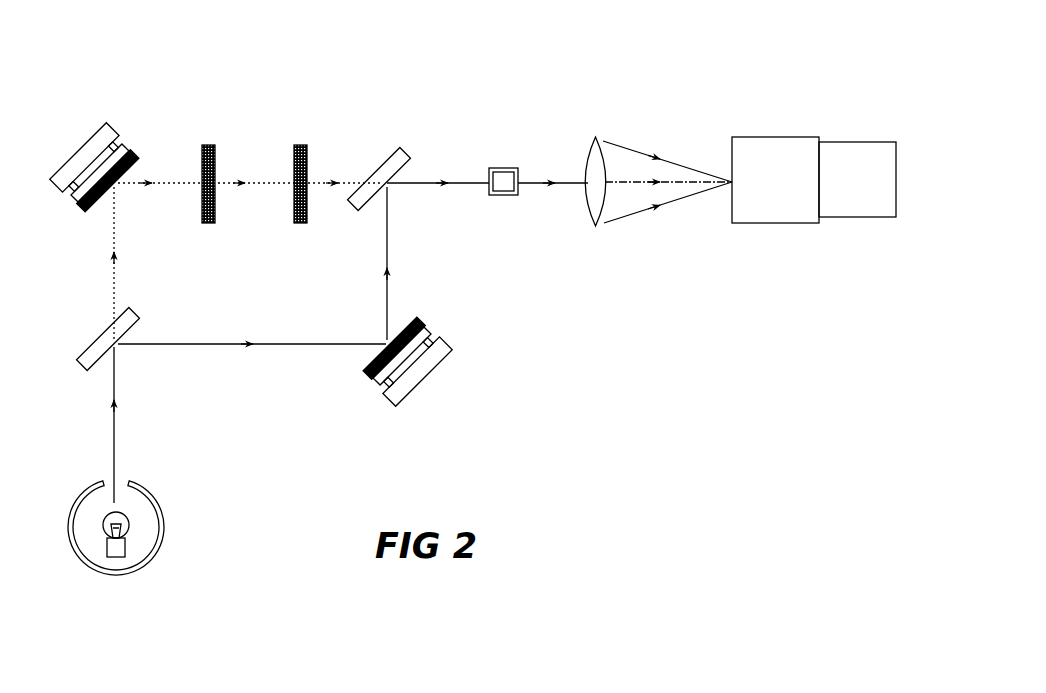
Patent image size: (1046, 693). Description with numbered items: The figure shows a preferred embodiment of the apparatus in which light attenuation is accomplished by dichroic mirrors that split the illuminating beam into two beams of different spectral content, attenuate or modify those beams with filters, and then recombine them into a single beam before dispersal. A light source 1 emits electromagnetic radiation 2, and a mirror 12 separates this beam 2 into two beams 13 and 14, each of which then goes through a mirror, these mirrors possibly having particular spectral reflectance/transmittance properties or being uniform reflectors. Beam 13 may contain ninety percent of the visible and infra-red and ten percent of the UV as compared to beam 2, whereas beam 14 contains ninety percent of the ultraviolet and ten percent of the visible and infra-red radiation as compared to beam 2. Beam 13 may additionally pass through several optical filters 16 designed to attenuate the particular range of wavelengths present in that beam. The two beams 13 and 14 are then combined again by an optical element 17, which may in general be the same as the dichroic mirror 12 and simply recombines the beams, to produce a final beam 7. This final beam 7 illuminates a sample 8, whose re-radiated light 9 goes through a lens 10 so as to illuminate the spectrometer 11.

The light source 1 is at (150, 555).
The electromagnetic radiation 2 is at (118, 442).
The final beam 7 is at (473, 184).
The sample 8 is at (503, 177).
The re-radiated light 9 is at (570, 184).
The lens 10 is at (600, 140).
The spectrometer 11 is at (786, 157).
The mirror 12 is at (97, 338).
The beam 13 is at (182, 185).
The beam 14 is at (293, 344).
The optical filters 16 is at (208, 145).
The optical element 17 is at (390, 150).